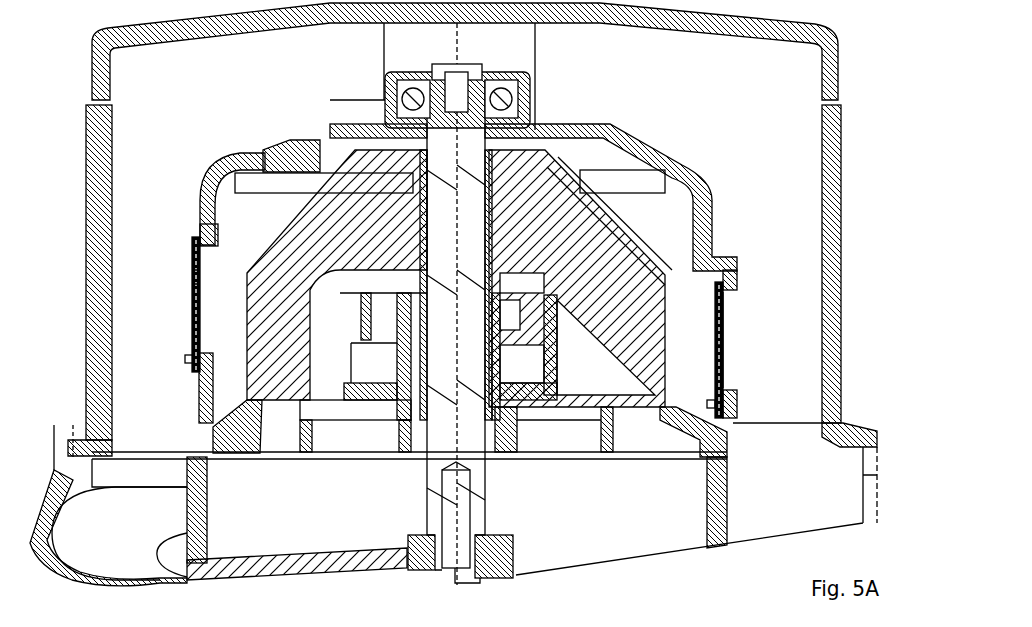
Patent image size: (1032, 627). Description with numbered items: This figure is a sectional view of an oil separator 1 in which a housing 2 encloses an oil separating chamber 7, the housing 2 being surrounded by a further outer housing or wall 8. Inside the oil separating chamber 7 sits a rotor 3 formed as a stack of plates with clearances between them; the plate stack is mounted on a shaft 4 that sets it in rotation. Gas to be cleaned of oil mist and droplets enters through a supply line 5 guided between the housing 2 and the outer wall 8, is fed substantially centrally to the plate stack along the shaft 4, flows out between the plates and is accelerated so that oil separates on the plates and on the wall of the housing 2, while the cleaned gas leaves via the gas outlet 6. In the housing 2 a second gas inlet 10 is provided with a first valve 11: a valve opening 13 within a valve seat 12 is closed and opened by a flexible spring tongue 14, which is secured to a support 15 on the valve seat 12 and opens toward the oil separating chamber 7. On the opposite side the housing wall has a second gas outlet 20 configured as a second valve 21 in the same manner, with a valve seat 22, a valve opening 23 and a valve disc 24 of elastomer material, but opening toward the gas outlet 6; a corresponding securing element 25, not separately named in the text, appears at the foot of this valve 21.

The oil separator 1 is at (853, 148).
The housing 2 is at (650, 152).
The rotor (plate stack) 3 is at (537, 234).
The shaft 4 is at (448, 232).
The supply line (gas inlet) 5 is at (459, 66).
The gas outlet 6 is at (287, 153).
The oil separating chamber 7 is at (256, 234).
The outer housing / outer wall 8 is at (840, 218).
The second gas inlet 10 is at (736, 273).
The valve (first valve) 11 is at (733, 337).
The valve seat 12 is at (738, 406).
The valve opening 13 is at (734, 313).
The spring tongue 14 is at (723, 355).
The support (securing point) 15 is at (713, 403).
The second gas outlet 20 is at (185, 256).
The second valve 21 is at (184, 300).
The valve seat 22 is at (205, 212).
The valve opening 23 is at (212, 326).
The valve disc 24 is at (192, 277).
The fastening element 25 is at (188, 365).